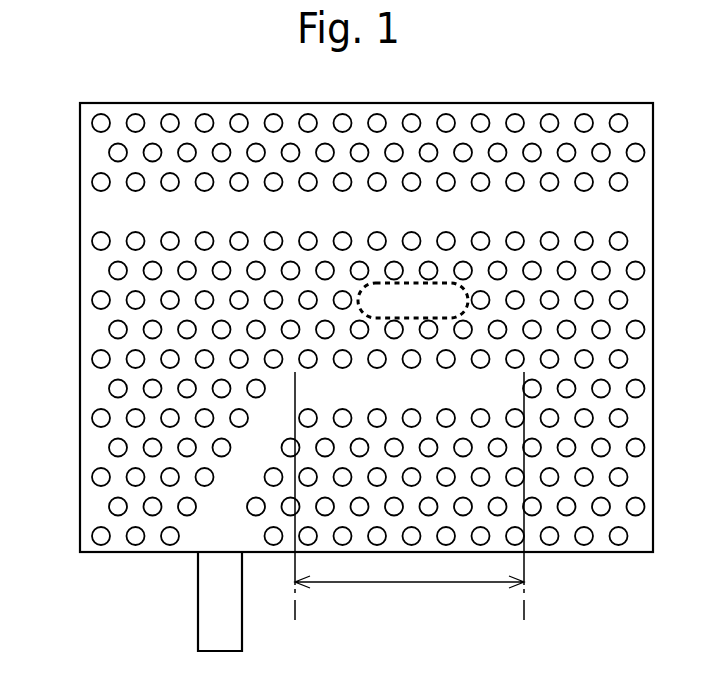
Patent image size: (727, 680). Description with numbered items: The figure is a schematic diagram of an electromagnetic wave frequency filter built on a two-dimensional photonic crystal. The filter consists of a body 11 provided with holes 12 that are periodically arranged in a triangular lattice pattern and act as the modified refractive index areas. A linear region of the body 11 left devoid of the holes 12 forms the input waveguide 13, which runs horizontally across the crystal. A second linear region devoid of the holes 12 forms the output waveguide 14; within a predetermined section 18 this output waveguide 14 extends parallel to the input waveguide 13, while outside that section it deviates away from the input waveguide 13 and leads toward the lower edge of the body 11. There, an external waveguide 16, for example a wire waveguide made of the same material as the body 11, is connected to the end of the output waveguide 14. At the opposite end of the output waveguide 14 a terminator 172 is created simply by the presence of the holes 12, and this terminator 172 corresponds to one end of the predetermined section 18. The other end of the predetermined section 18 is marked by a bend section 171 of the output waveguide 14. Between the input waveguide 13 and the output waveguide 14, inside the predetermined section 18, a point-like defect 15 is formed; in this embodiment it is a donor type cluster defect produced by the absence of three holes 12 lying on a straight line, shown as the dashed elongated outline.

The body 11 is at (255, 128).
The holes 12 is at (308, 122).
The input waveguide 13 is at (582, 210).
The output waveguide 14 is at (465, 395).
The point-like defect 15 is at (430, 303).
The external waveguide 16 is at (228, 615).
The bend section 171 is at (293, 397).
The terminator 172 is at (524, 397).
The predetermined section 18 is at (409, 594).